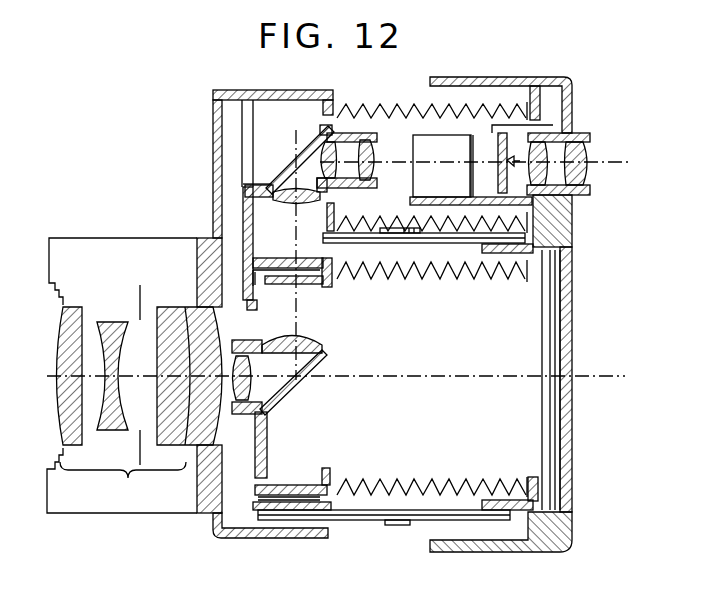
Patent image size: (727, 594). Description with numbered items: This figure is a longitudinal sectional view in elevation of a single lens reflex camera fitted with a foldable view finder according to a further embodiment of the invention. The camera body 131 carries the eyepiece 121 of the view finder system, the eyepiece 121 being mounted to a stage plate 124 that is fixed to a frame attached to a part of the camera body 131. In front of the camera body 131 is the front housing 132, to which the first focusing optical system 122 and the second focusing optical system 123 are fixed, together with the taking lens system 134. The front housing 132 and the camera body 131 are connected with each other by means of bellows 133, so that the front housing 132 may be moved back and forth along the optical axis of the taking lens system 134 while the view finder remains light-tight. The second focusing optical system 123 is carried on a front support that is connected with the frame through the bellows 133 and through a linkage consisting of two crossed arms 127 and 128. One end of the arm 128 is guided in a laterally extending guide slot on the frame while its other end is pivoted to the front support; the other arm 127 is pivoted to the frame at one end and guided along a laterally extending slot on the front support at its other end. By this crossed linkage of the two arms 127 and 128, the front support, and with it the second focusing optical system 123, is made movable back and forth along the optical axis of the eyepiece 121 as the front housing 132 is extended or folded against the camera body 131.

The eyepiece 121 is at (592, 130).
The first focusing optical system 122 is at (320, 366).
The second focusing optical system 123 is at (354, 124).
The stage plate 124 is at (478, 206).
The arm 127 is at (373, 228).
The arm 128 is at (393, 244).
The camera body 131 is at (549, 77).
The front housing 132 is at (213, 150).
The bellows 133 is at (452, 478).
The taking lens system 134 is at (134, 375).